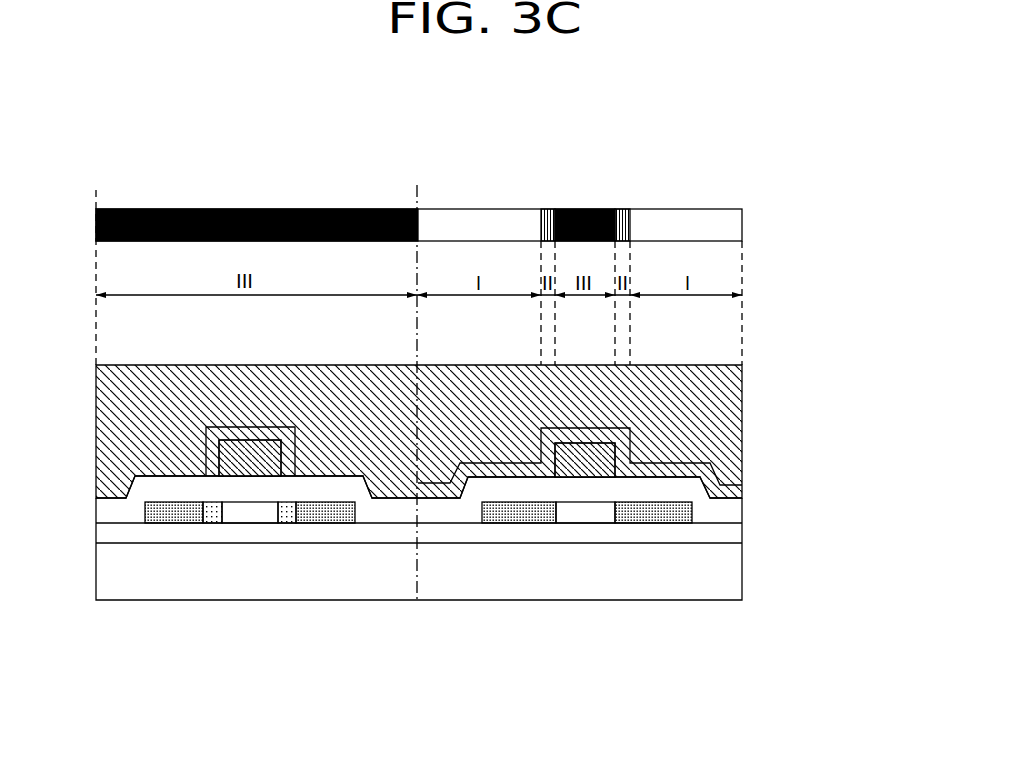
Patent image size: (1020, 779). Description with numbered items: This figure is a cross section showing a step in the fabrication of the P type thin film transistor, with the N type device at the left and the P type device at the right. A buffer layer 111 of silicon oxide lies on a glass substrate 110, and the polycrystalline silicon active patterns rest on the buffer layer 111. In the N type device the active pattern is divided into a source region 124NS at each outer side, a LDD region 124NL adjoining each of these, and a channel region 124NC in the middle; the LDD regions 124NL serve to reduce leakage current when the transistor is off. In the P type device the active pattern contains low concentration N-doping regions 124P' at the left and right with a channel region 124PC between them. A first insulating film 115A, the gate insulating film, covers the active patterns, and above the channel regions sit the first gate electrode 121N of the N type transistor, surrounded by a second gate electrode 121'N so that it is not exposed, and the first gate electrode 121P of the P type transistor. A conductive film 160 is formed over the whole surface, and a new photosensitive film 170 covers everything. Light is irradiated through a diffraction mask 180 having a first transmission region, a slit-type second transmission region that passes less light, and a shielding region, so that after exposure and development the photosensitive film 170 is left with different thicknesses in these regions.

The diffraction mask 180 is at (752, 202).
The photosensitive film 170 is at (740, 401).
The conductive film 160 is at (715, 470).
The first insulating film 115A is at (735, 511).
The buffer layer 111 is at (735, 537).
The substrate 110 is at (735, 570).
The first gate electrode 121N is at (230, 440).
The second gate electrode 121'N is at (256, 397).
The first gate electrode 121P is at (583, 443).
The N type source region 124NS is at (157, 524).
The LDD region 124NL is at (212, 524).
The channel region 124NC is at (247, 521).
The N-doping region 124P' is at (587, 575).
The channel region 124PC is at (583, 521).